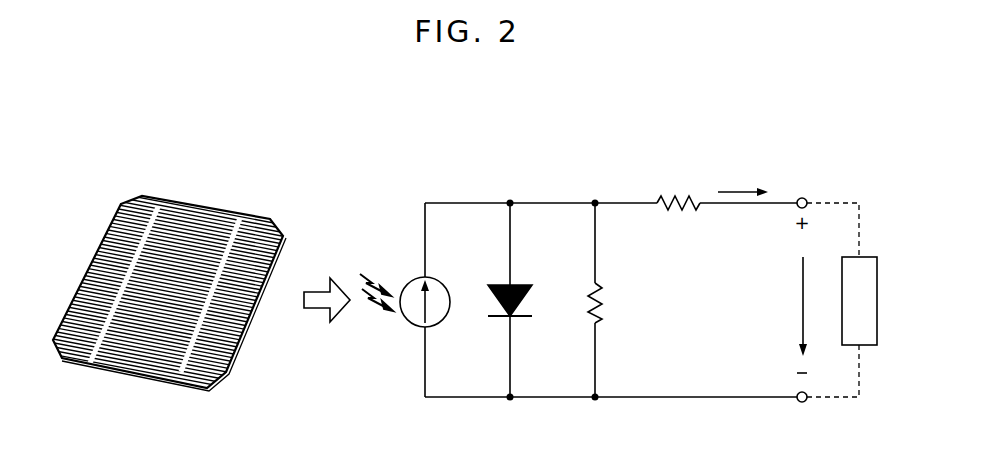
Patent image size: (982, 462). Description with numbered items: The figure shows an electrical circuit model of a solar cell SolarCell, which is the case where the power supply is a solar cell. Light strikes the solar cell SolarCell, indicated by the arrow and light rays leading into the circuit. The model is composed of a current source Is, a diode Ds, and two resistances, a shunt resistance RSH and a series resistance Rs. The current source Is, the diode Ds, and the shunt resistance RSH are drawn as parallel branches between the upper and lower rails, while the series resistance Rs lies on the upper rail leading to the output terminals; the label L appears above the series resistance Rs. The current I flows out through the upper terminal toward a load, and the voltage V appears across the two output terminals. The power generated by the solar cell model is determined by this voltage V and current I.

The solar cell SolarCell is at (207, 205).
The current source Is is at (435, 302).
The diode Ds is at (525, 300).
The shunt resistance RSH is at (615, 303).
The series resistance Rs is at (678, 218).
The inductance label L is at (678, 185).
The current I is at (743, 179).
The voltage V is at (794, 306).